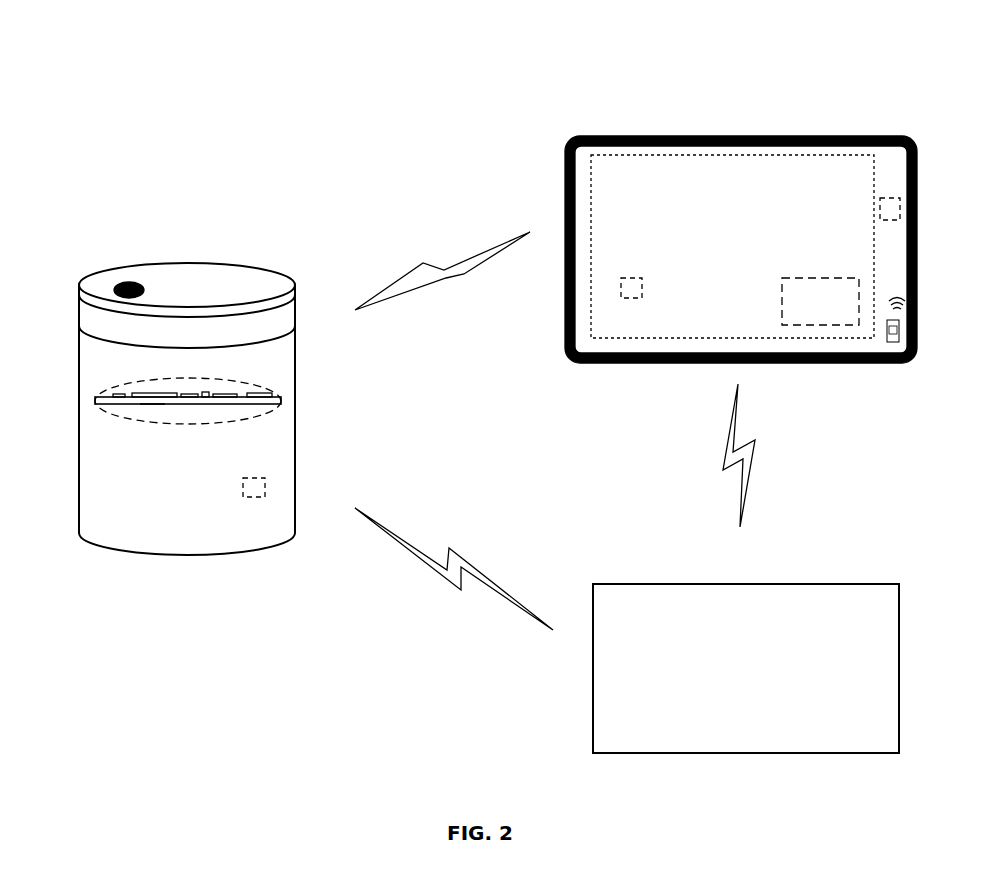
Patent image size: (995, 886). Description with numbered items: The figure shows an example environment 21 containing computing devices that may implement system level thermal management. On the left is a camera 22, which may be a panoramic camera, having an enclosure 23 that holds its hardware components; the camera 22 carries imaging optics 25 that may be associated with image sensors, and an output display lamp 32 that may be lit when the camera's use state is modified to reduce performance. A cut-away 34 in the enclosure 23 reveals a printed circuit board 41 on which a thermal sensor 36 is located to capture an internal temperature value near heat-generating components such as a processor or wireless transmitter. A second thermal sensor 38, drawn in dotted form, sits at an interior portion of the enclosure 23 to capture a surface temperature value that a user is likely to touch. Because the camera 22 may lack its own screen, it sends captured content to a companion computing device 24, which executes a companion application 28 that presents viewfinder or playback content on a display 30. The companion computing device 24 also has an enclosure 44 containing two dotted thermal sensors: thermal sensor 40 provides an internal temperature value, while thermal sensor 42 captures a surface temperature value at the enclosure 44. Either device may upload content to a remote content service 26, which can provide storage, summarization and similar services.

The environment 21 is at (921, 70).
The camera 22 is at (265, 251).
The enclosure 23 is at (79, 518).
The companion computing device 24 is at (738, 75).
The imaging optics 25 is at (92, 316).
The remote content service 26 is at (899, 630).
The companion application 28 is at (818, 278).
The display 30 is at (771, 182).
The output display lamp 32 is at (128, 283).
The cut-away 34 is at (262, 388).
The thermal sensor 36 is at (118, 393).
The thermal sensor 38 is at (257, 477).
The thermal sensor 40 is at (642, 288).
The printed circuit board 41 is at (152, 404).
The thermal sensor 42 is at (889, 198).
The enclosure 44 is at (620, 136).